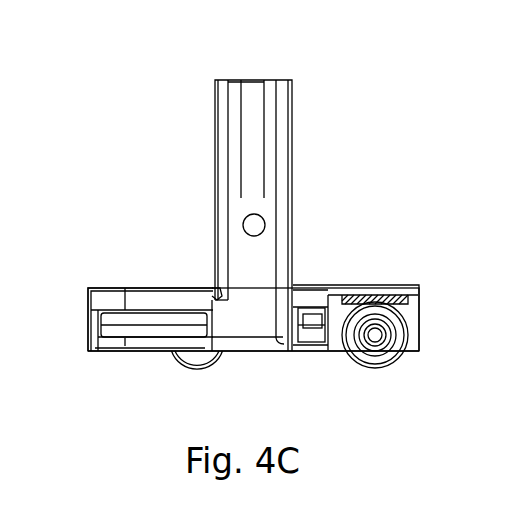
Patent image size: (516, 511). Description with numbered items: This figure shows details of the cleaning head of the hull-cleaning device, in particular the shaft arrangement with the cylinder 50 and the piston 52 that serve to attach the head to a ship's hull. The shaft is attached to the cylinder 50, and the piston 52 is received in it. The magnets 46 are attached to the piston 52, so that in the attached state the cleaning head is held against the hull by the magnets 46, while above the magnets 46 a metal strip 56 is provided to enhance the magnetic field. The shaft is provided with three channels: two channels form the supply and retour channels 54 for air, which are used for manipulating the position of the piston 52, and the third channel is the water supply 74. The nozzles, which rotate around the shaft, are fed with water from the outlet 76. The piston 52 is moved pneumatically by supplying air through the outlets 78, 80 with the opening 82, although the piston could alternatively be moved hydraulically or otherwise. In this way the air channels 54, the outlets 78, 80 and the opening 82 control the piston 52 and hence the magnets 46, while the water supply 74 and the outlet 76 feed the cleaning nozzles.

The cylinder 50 is at (118, 270).
The piston 52 is at (90, 310).
The supply and retour channels 54 is at (282, 104).
The metal strip 56 is at (142, 318).
The magnets 46 is at (113, 333).
The water supply channel 74 is at (253, 90).
The outlet 76 is at (254, 225).
The outlet 78 is at (212, 292).
The outlet 80 is at (288, 348).
The opening 82 is at (223, 353).